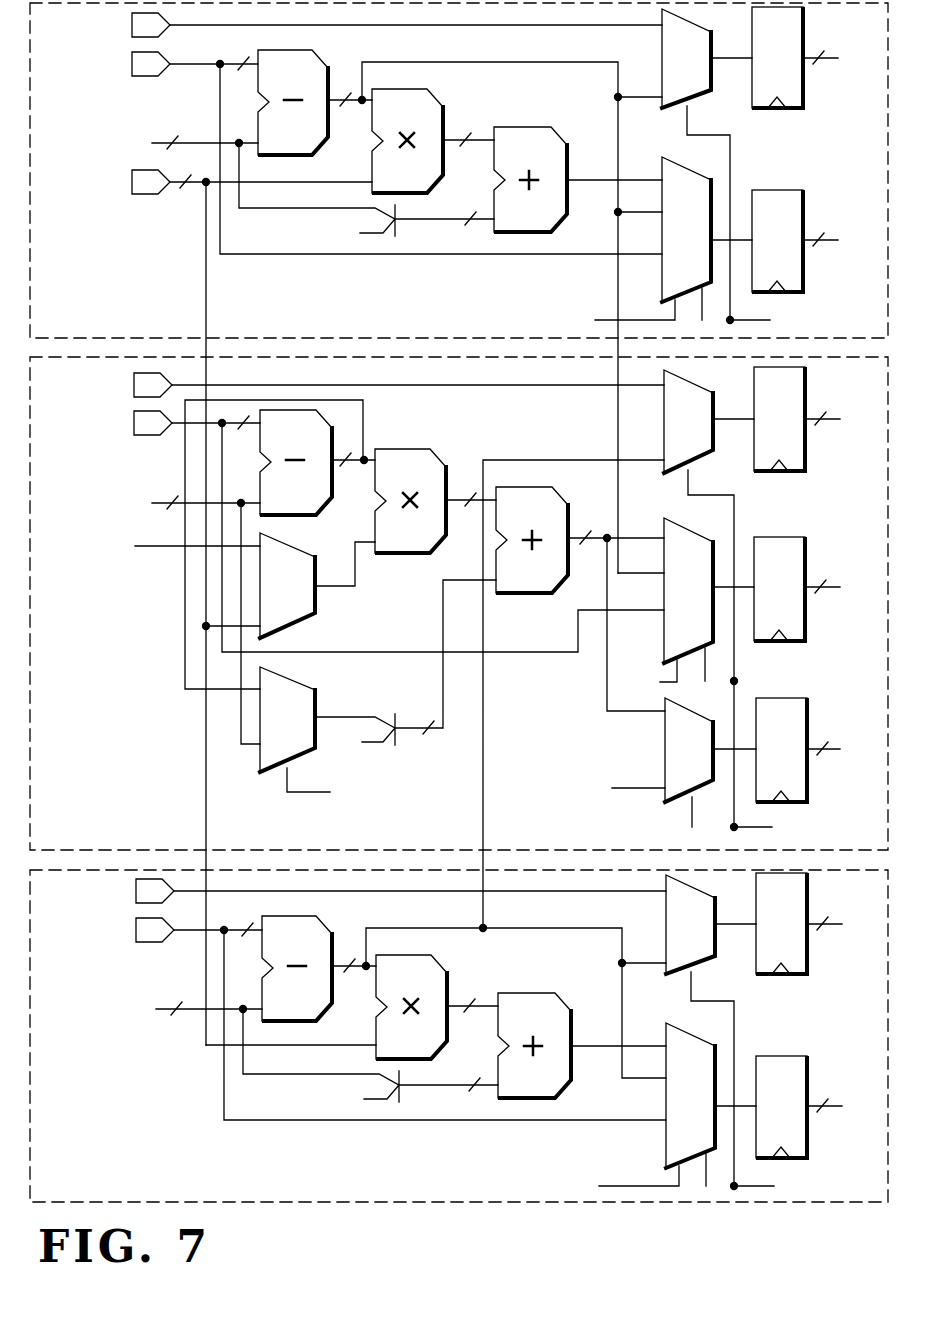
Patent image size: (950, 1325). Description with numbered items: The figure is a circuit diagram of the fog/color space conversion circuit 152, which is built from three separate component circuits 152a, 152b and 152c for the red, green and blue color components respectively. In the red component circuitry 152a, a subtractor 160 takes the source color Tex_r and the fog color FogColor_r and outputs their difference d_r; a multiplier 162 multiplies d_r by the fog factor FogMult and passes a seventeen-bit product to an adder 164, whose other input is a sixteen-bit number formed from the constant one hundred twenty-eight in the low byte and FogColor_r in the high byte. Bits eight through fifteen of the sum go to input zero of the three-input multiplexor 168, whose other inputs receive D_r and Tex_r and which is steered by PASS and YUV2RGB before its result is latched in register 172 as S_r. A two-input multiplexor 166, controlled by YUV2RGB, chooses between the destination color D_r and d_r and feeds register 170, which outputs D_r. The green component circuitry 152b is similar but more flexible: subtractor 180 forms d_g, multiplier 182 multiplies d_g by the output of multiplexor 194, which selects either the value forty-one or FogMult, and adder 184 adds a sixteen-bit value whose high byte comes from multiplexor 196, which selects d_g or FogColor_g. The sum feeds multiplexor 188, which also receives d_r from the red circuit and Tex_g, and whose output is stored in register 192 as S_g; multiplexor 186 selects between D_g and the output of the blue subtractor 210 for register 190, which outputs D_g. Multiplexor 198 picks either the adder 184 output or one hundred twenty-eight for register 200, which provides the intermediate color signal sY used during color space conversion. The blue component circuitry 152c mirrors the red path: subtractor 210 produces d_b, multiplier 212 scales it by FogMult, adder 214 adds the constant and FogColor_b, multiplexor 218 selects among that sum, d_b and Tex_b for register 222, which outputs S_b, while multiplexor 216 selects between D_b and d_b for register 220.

The fog/color space conversion circuit 152 is at (459, 630).
The red color component circuitry 152a is at (459, 524).
The green component circuitry 152b is at (459, 642).
The blue component circuitry 152c is at (459, 1036).
The subtractor 160 is at (293, 102).
The multiplier 162 is at (407, 141).
The adder 164 is at (530, 179).
The multiplexor 166 is at (686, 58).
The multiplexor 168 is at (686, 229).
The register 170 is at (777, 57).
The register 172 is at (777, 241).
The subtractor 180 is at (296, 462).
The multiplier 182 is at (410, 501).
The adder 184 is at (532, 540).
The multiplexor 186 is at (688, 421).
The multiplexor 188 is at (688, 590).
The register 190 is at (779, 419).
The register 192 is at (779, 589).
The multiplexor 194 is at (287, 585).
The multiplexor 196 is at (287, 719).
The multiplexor 198 is at (689, 750).
The register 200 is at (781, 750).
The subtractor 210 is at (297, 968).
The multiplier 212 is at (411, 1007).
The adder 214 is at (534, 1045).
The multiplexor 216 is at (690, 924).
The multiplexor 218 is at (690, 1095).
The register 220 is at (781, 923).
The register 222 is at (781, 1107).